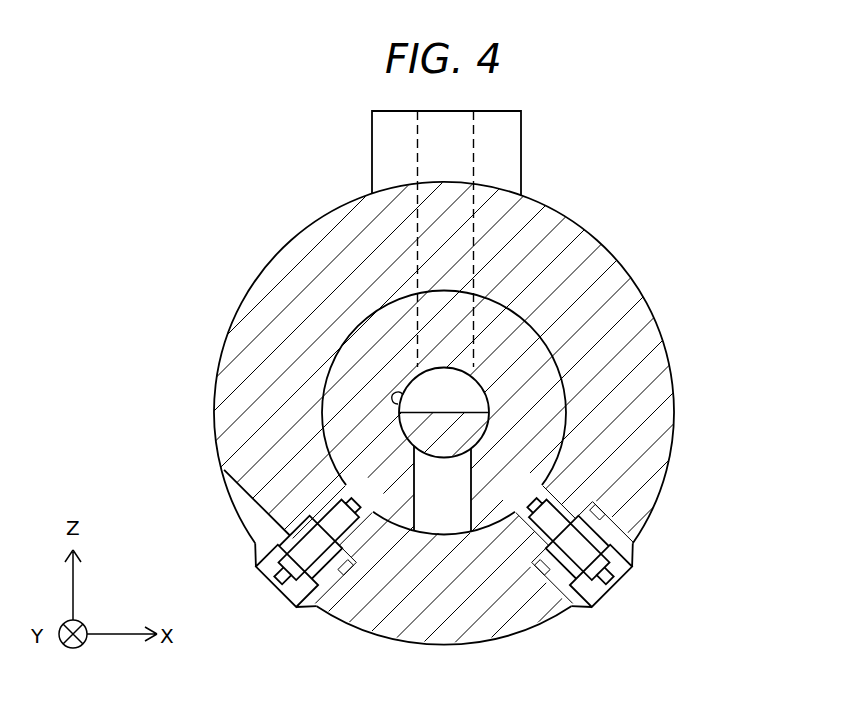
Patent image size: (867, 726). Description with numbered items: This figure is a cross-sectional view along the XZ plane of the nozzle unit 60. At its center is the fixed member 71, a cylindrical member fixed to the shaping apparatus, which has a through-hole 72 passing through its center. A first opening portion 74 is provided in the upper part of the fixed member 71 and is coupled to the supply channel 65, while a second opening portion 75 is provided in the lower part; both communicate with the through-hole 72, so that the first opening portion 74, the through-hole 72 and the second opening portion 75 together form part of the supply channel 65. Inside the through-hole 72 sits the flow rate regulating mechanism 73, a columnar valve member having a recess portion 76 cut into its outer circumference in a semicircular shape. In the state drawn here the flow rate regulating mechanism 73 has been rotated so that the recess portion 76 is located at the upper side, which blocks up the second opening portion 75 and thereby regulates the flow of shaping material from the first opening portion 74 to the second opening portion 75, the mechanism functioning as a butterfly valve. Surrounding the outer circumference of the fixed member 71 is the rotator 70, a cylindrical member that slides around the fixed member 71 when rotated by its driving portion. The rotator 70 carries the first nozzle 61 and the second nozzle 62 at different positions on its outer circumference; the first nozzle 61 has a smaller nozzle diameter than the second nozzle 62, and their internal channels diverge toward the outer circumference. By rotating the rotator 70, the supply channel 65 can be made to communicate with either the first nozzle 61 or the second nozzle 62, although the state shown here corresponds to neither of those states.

The nozzle unit 60 is at (187, 166).
The first nozzle 61 is at (283, 598).
The second nozzle 62 is at (598, 602).
The supply channel 65 is at (466, 164).
The rotator 70 is at (433, 363).
The fixed member 71 is at (532, 388).
The through-hole 72 is at (403, 395).
The flow rate regulating mechanism 73 is at (425, 434).
The first opening portion 74 is at (466, 347).
The second opening portion 75 is at (470, 479).
The recess portion 76 is at (445, 412).